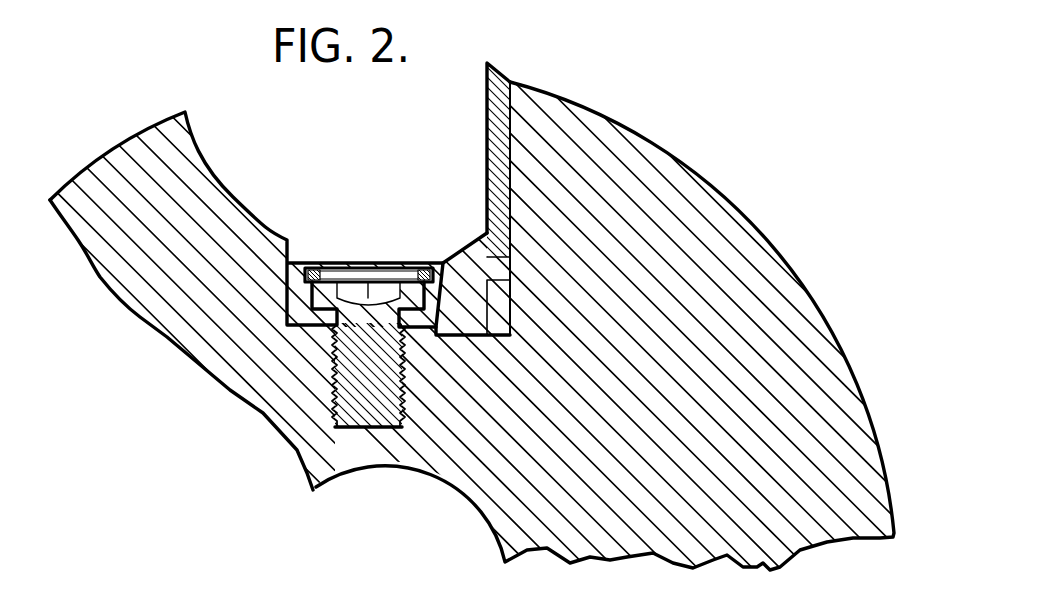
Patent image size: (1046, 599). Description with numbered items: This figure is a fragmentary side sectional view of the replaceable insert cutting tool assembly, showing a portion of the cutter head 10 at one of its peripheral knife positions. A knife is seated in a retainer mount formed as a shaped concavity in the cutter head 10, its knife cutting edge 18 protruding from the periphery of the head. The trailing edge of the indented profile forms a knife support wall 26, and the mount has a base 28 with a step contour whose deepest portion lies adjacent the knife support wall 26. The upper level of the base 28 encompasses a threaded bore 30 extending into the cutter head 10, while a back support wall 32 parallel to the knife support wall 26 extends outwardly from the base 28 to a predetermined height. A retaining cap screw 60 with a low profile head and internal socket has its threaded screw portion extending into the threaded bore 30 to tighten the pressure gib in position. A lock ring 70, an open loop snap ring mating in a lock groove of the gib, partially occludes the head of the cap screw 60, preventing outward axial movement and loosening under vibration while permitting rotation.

The cutter head 10 is at (745, 243).
The knife cutting edge 18 is at (490, 62).
The knife support wall 26 is at (513, 128).
The base 28 is at (459, 323).
The threaded bore 30 is at (332, 390).
The back support wall 32 is at (287, 302).
The retaining cap screw 60 is at (387, 280).
The lock ring 70 is at (420, 270).